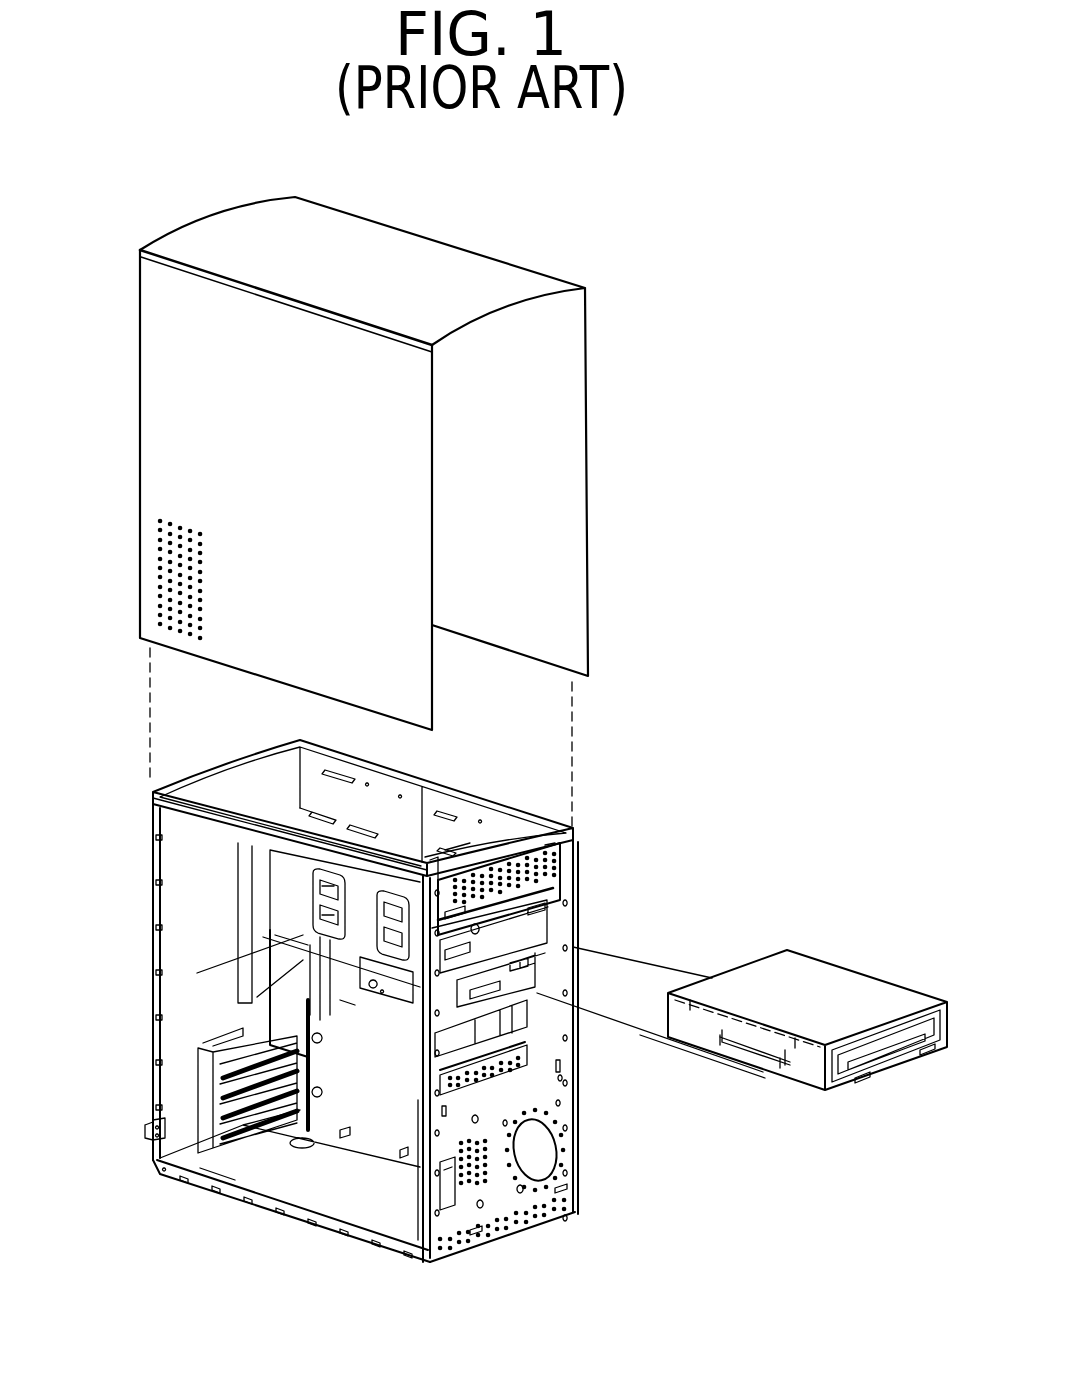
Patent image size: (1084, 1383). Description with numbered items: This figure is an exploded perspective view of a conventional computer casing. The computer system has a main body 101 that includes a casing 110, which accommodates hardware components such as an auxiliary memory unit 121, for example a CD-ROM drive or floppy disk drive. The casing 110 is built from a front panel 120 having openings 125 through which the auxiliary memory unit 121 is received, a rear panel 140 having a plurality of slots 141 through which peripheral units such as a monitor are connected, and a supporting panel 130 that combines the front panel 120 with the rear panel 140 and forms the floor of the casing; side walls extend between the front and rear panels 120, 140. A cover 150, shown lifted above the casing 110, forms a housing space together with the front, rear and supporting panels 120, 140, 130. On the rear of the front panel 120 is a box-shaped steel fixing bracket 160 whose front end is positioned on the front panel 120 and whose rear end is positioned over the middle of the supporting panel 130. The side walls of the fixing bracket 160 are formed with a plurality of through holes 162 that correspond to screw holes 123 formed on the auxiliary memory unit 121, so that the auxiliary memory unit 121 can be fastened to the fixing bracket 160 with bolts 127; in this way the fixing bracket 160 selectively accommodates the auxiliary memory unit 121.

The main body 101 is at (648, 551).
The casing 110 is at (357, 1317).
The front panel 120 is at (422, 1218).
The auxiliary memory unit 121 is at (870, 992).
The screw holes 123 is at (787, 1063).
The openings 125 is at (545, 916).
The bolts 127 is at (193, 976).
The supporting panel 130 is at (333, 1210).
The rear panel 140 is at (157, 1140).
The slots 141 is at (257, 996).
The cover 150 is at (590, 333).
The fixing bracket 160 is at (276, 907).
The through holes 162 is at (530, 1020).